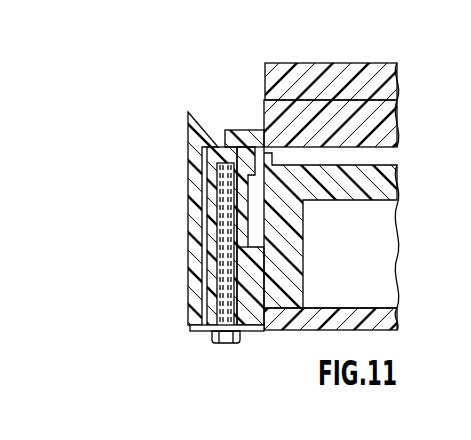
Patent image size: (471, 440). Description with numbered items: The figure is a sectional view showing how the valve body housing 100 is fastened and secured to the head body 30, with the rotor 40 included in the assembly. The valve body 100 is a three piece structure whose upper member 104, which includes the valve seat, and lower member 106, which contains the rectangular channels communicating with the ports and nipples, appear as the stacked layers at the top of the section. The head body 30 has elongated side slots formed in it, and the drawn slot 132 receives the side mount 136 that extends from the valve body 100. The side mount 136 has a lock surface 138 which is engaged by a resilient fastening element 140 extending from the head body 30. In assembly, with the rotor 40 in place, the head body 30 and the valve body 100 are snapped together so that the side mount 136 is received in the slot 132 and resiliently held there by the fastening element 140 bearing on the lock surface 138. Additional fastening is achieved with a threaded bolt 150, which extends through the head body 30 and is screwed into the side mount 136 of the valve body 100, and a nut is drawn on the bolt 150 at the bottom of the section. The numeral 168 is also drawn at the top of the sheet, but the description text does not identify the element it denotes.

The assembly 168 is at (177, 6).
The valve body 100 is at (251, 78).
The lower member 106 is at (329, 72).
The upper member 104 is at (266, 116).
The rotor 40 is at (298, 247).
The head body 30 is at (383, 320).
The lock surface 138 is at (220, 147).
The fastening element 140 is at (192, 131).
The side mount 136 is at (208, 207).
The side slot 132 is at (246, 220).
The bolt 150 is at (224, 344).